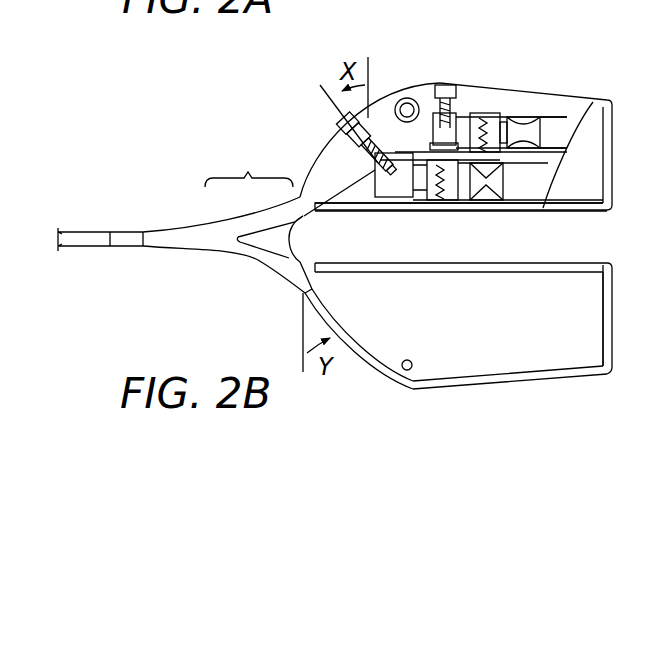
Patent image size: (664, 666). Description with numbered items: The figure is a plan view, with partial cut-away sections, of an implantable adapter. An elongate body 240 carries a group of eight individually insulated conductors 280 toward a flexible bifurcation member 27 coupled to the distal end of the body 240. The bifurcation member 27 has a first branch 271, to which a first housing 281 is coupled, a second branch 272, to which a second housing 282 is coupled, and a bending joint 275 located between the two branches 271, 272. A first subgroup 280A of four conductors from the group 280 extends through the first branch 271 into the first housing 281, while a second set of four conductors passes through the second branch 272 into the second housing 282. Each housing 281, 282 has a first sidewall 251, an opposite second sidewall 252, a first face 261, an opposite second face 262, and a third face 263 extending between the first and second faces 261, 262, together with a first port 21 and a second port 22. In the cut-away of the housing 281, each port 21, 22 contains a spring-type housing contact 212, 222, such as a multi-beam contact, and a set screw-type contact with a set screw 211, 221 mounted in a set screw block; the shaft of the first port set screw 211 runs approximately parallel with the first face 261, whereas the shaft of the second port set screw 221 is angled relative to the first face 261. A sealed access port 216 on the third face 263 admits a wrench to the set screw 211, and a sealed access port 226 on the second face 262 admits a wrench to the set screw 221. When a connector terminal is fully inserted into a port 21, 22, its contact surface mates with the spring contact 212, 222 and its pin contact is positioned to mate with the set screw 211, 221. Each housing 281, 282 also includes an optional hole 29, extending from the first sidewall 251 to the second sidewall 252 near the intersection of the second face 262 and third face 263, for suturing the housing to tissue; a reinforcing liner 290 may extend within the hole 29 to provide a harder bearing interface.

The first port 21 is at (563, 128).
The second port 22 is at (534, 192).
The flexible bifurcation member 27 is at (246, 171).
The hole 29 is at (400, 103).
The first port set screw 211 is at (457, 108).
The spring-type housing contact 212 is at (527, 117).
The access port 216 is at (441, 85).
The second port set screw 221 is at (374, 160).
The spring-type housing contact 222 is at (486, 197).
The access port 226 is at (352, 126).
The elongate body 240 is at (77, 243).
The first sidewall 251 is at (590, 208).
The second sidewall 252 is at (512, 340).
The first face 261 is at (610, 155).
The second face 262 is at (348, 148).
The third face 263 is at (507, 91).
The first branch 271 is at (288, 218).
The second branch 272 is at (285, 270).
The bending joint 275 is at (273, 244).
The group of eight conductors 280 is at (128, 232).
The first subgroup of conductors 280A is at (297, 193).
The first housing 281 is at (594, 70).
The second housing 282 is at (545, 403).
The reinforcing tubing or liner 290 is at (407, 97).